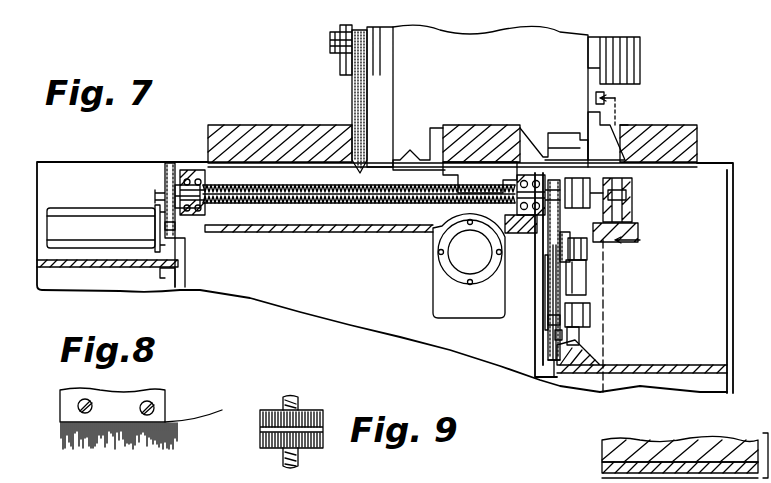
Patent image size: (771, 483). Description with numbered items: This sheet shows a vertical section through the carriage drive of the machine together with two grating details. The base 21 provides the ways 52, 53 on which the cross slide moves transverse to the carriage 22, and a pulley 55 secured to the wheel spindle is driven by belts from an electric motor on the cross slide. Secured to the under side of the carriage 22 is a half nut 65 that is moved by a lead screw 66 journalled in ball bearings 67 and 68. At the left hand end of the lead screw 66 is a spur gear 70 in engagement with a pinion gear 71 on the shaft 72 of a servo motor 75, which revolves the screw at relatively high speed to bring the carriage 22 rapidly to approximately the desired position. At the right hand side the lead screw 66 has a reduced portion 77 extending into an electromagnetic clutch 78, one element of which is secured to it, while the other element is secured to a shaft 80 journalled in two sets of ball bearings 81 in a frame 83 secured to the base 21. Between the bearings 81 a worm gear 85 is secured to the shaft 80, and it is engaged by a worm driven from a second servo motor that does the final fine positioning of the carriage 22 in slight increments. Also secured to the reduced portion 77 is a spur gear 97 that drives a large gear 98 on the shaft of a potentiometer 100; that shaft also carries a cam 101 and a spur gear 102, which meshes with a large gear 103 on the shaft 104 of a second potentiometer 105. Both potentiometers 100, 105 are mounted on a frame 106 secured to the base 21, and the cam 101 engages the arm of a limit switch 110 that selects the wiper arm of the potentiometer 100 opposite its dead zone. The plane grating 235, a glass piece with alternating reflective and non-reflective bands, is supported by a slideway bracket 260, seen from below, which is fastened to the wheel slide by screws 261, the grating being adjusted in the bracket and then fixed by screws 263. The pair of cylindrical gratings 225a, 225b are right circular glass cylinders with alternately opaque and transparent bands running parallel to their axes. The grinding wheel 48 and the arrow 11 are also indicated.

In FIG. 7, the arrow / direction indicator 11 is at (629, 173).
In FIG. 7, the base 21 is at (733, 302).
In FIG. 7, the carriage 22 is at (697, 143).
In FIG. 7, the grinding wheel 48 is at (352, 98).
In FIG. 7, the way 52 is at (400, 135).
In FIG. 7, the way 53 is at (560, 135).
In FIG. 7, the pulley 55 is at (640, 68).
In FIG. 7, the half nut 65 is at (478, 170).
In FIG. 7, the lead screw 66 is at (340, 205).
In FIG. 7, the ball bearing 67 is at (198, 172).
In FIG. 7, the ball bearing 68 is at (527, 178).
In FIG. 7, the spur gear 70 is at (178, 152).
In FIG. 7, the pinion gear 71 is at (178, 246).
In FIG. 7, the shaft 72 is at (168, 270).
In FIG. 7, the servo motor 75 is at (85, 212).
In FIG. 7, the reduced portion 77 is at (575, 150).
In FIG. 7, the electromagnetic clutch 78 is at (577, 210).
In FIG. 7, the shaft 80 is at (572, 250).
In FIG. 7, the ball bearings 81 is at (632, 185).
In FIG. 7, the frame 83 is at (638, 232).
In FIG. 7, the worm gear 85 is at (632, 198).
In FIG. 7, the spur gear 97 is at (548, 235).
In FIG. 7, the large gear 98 is at (549, 258).
In FIG. 7, the potentiometer 100 is at (588, 265).
In FIG. 7, the cam 101 is at (586, 278).
In FIG. 7, the spur gear 102 is at (546, 270).
In FIG. 7, the large gear 103 is at (550, 318).
In FIG. 7, the shaft 104 is at (556, 335).
In FIG. 7, the potentiometer 105 is at (592, 330).
In FIG. 7, the frame 106 is at (558, 362).
In FIG. 7, the limit switch 110 is at (579, 320).
In FIG. 9, the cylindrical grating 225a is at (323, 420).
In FIG. 9, the cylindrical grating 225b is at (323, 440).
In FIG. 8, the plane grating 235 is at (205, 407).
In FIG. 9, the plane grating 235 is at (618, 470).
In FIG. 7, the slideway bracket 260 is at (600, 165).
In FIG. 8, the slideway bracket 260 is at (60, 410).
In FIG. 9, the slideway bracket 260 is at (698, 450).
In FIG. 7, the screws 261 is at (590, 100).
In FIG. 8, the screws 263 is at (146, 400).